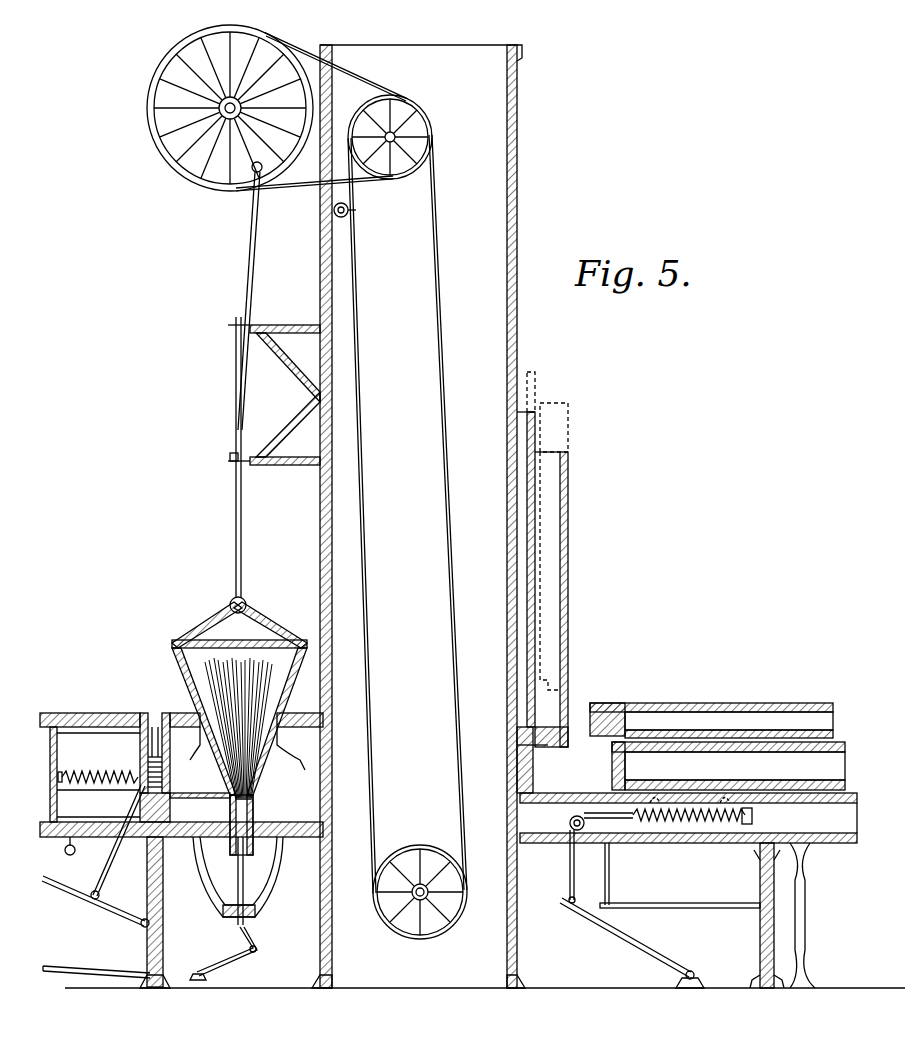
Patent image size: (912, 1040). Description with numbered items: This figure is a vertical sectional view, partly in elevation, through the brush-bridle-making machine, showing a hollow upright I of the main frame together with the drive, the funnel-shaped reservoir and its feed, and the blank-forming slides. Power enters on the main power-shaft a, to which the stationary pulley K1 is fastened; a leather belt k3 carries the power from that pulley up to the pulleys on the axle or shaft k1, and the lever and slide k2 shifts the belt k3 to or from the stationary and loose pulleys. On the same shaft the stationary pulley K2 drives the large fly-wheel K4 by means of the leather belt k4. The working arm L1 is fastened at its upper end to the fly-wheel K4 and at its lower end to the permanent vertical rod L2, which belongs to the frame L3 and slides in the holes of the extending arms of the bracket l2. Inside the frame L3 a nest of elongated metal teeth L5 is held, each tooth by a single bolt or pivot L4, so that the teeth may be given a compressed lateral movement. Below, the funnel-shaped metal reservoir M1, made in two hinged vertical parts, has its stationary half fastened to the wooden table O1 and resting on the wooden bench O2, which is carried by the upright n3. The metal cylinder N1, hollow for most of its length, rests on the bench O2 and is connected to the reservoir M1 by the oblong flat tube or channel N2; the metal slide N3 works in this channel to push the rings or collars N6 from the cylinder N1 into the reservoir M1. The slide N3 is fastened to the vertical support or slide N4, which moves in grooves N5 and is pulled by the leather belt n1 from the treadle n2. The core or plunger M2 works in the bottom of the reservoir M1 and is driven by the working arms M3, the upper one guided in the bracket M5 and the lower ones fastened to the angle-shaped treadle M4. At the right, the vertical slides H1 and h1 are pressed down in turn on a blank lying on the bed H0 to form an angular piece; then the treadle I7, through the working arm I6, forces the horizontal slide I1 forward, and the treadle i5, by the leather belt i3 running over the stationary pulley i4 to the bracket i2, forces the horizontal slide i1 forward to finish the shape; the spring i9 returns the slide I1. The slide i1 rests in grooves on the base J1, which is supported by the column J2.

The column I is at (517, 115).
The fly-wheel K4 is at (160, 146).
The leather belt k4 is at (302, 186).
The axle or shaft k1 is at (395, 137).
The stationary pulley K2 is at (360, 108).
The lever and slide k2 is at (343, 218).
The leather belt k3 is at (407, 514).
The stationary pulley K1 is at (422, 846).
The main power-shaft a is at (423, 896).
The working arm L1 is at (241, 301).
The vertical rod L2 is at (247, 457).
The bracket l2 is at (285, 395).
The elongated metal tooth L5 is at (208, 632).
The frame L3 is at (272, 632).
The bolt or pivot L4 is at (286, 712).
The funnel-shaped metal reservoir M1 is at (258, 760).
The wooden table O1 is at (181, 731).
The grooves N5 is at (91, 753).
The metal rings or collars N6 is at (160, 713).
The vertical metal support or slide N4 is at (78, 762).
The metal cylinder N1 is at (140, 745).
The oblong flat metal tube or channel N2 is at (190, 793).
The wooden bench or table O2 is at (67, 851).
The upright n3 is at (161, 912).
The leather belt n1 is at (112, 858).
The treadle n2 is at (125, 903).
The metal slide N3 is at (98, 848).
The angle-shaped treadle M4 is at (96, 961).
The metal core or plunger M2 is at (238, 862).
The bracket M5 is at (270, 872).
The working arms M3 is at (246, 925).
The vertical slide H1 is at (517, 506).
The second vertical slide h1 is at (561, 575).
The bed or table H0 is at (533, 748).
The horizontal slide I1 is at (762, 703).
The horizontal slide i1 is at (852, 736).
The horizontal table or base J1 is at (832, 843).
The column J2 is at (807, 915).
The spring i9 is at (712, 828).
The stationary pulley i4 is at (586, 823).
The bracket i2 is at (755, 816).
The leather belt i3 is at (565, 865).
The treadle i5 is at (625, 947).
The working arm I6 is at (612, 873).
The treadle I7 is at (680, 914).